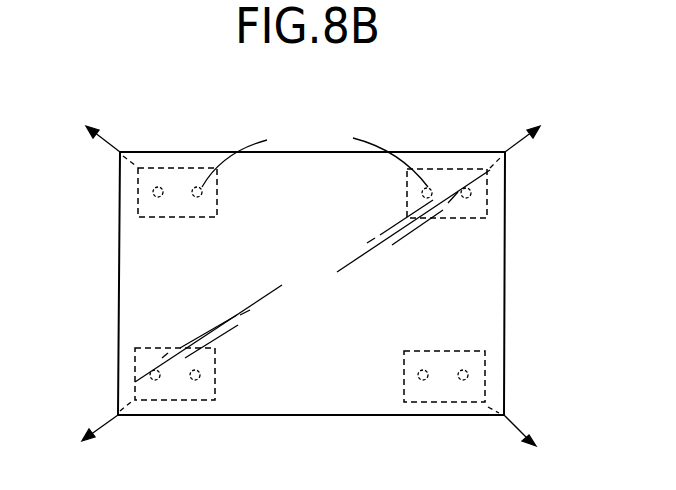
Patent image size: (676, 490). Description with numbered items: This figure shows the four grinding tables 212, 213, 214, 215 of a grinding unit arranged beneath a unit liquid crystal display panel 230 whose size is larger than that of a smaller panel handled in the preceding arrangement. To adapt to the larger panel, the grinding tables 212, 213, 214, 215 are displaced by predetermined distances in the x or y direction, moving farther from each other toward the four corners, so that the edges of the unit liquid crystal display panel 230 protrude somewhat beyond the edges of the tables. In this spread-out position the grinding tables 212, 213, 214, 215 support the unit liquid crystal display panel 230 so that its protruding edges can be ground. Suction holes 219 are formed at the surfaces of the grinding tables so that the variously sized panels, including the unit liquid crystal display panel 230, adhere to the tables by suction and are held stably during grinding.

The grinding table 212 is at (138, 190).
The grinding table 213 is at (487, 192).
The grinding table 214 is at (135, 372).
The grinding table 215 is at (485, 372).
The suction holes 219 is at (353, 138).
The unit liquid crystal display panel 230 is at (301, 415).